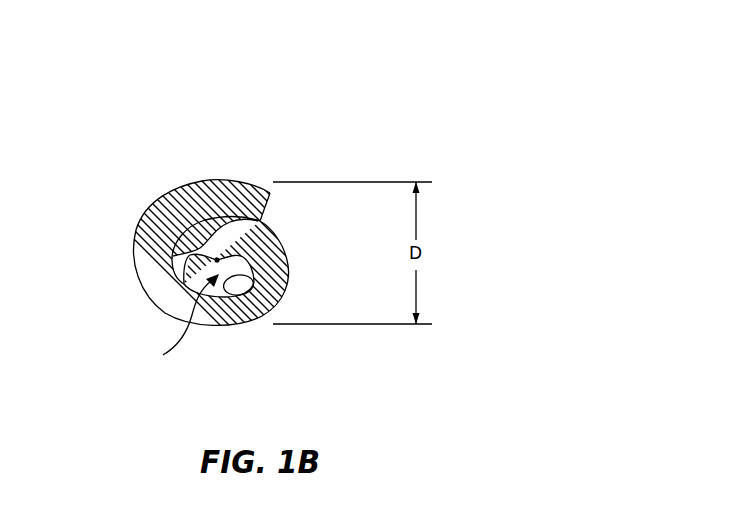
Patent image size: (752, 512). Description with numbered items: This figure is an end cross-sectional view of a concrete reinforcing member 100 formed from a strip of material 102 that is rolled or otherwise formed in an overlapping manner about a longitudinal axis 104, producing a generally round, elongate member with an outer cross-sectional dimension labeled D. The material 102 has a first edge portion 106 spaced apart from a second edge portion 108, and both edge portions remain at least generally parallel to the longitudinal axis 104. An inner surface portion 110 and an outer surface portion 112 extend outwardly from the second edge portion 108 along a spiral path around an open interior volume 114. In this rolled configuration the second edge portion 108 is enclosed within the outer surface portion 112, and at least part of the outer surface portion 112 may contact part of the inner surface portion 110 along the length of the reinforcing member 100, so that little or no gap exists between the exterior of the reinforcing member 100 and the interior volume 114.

The concrete reinforcing member 100 is at (288, 227).
The strip of material 102 is at (153, 216).
The longitudinal axis 104 is at (185, 283).
The first edge portion 106 is at (264, 214).
The second edge portion 108 is at (217, 260).
The inner surface portion 110 is at (278, 283).
The outer surface portion 112 is at (231, 322).
The open interior volume 114 is at (173, 320).